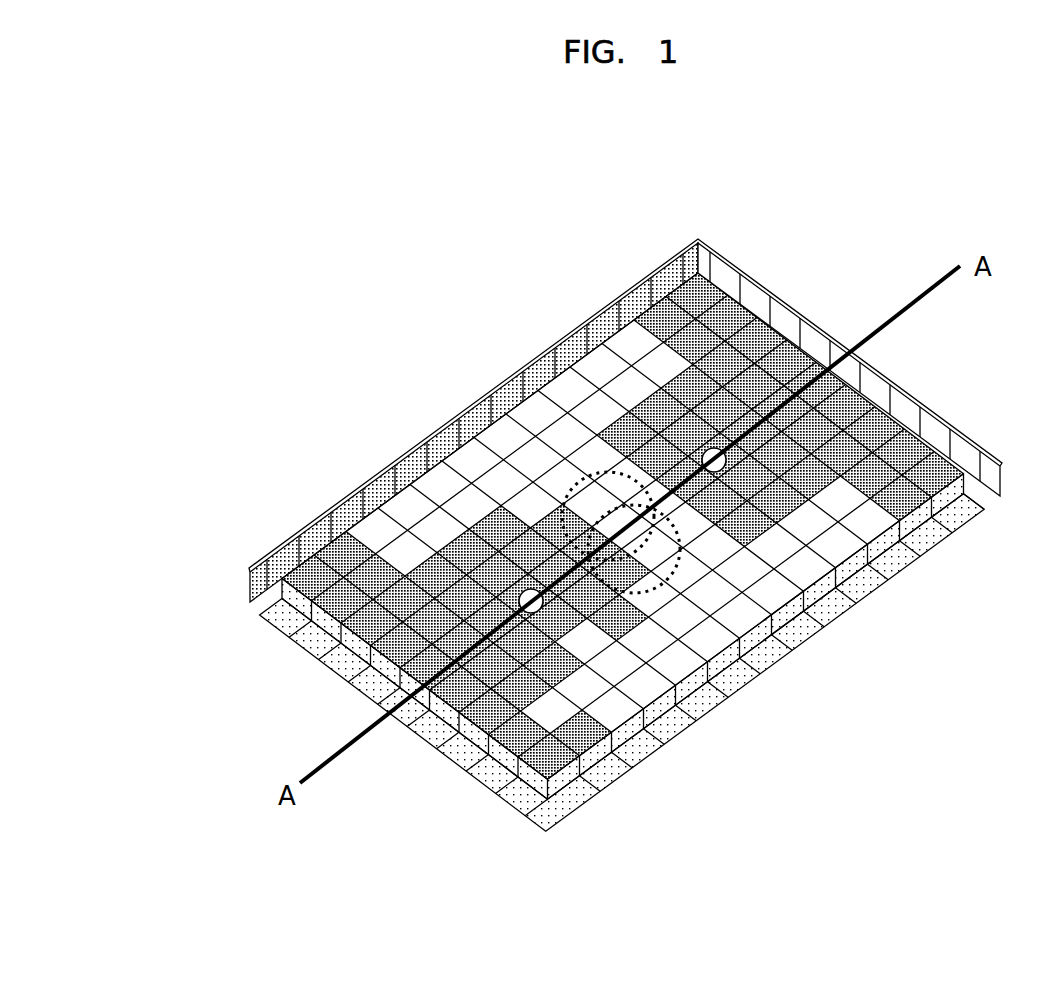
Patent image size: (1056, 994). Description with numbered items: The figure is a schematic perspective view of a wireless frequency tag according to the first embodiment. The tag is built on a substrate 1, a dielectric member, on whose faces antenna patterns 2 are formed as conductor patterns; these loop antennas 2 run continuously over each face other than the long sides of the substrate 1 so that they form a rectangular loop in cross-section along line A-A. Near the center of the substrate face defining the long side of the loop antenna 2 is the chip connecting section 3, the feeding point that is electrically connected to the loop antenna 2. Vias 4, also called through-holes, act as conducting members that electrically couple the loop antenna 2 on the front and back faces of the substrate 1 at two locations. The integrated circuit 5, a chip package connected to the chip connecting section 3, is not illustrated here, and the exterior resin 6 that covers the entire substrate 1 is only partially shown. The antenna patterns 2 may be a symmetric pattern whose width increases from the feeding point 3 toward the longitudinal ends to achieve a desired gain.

The substrate 1 is at (790, 566).
The antenna patterns 2 is at (916, 466).
The chip connecting section 3 is at (613, 512).
The vias 4 is at (711, 470).
The integrated circuit 5 is at (349, 658).
The exterior resin 6 is at (758, 297).